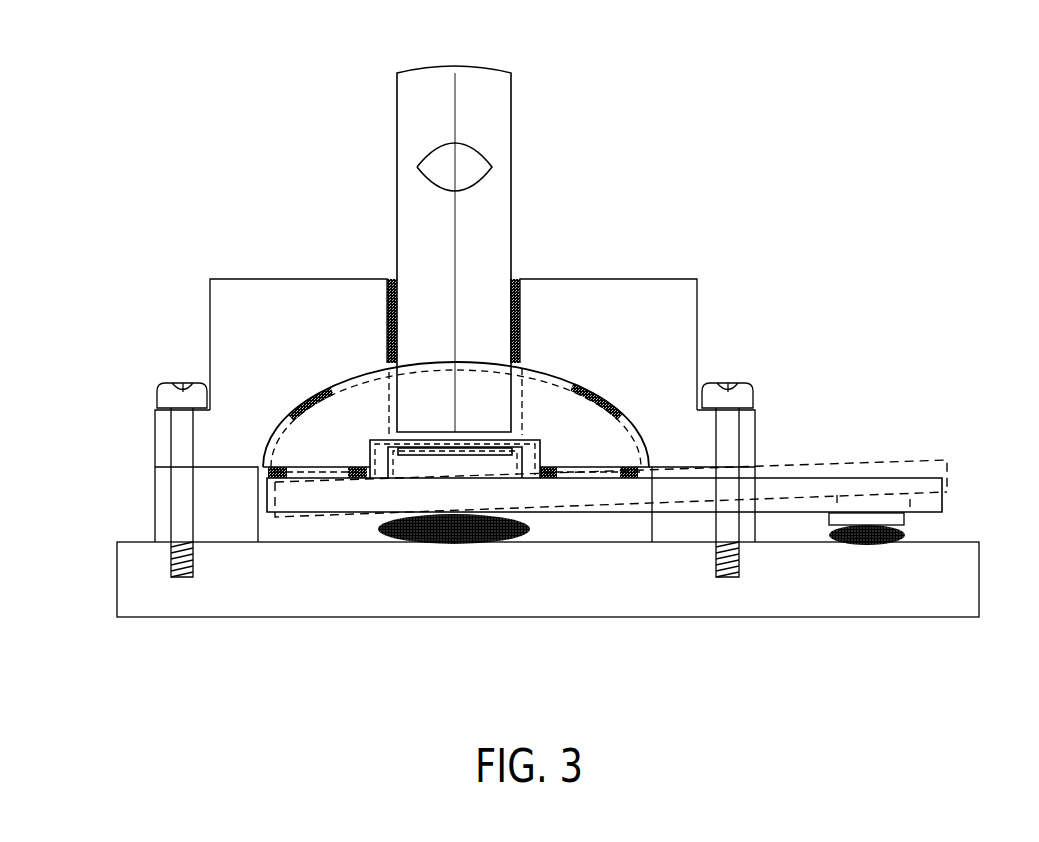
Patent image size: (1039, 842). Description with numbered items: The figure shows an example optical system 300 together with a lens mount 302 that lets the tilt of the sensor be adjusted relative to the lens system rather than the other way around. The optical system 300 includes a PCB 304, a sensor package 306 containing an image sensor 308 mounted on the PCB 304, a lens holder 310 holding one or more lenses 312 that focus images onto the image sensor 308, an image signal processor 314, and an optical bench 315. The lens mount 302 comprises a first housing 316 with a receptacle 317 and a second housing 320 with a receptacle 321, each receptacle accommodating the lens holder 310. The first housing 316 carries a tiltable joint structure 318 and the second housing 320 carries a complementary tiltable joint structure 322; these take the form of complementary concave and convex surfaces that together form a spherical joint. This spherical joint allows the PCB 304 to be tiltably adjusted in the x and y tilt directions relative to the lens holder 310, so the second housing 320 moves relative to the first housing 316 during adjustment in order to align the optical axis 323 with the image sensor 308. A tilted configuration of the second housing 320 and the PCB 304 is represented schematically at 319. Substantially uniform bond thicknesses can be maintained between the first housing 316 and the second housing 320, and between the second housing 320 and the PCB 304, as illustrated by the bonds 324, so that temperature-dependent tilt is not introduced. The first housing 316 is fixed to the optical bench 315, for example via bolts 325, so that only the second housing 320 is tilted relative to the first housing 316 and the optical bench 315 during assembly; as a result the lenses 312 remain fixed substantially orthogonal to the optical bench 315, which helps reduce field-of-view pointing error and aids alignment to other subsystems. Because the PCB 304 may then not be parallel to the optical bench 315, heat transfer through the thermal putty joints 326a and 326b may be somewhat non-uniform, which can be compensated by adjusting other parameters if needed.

The optical system 300 is at (868, 71).
The lens mount 302 is at (135, 279).
The PCB 304 is at (817, 477).
The sensor package 306 is at (523, 458).
The image sensor 308 is at (458, 460).
The lens holder 310 is at (512, 205).
The lenses 312 is at (483, 152).
The image signal processor 314 is at (906, 516).
The optical bench 315 is at (545, 594).
The first housing 316 is at (338, 344).
The receptacle 317 is at (515, 276).
The tiltable joint structure 318 is at (628, 412).
The tilted configuration 319 is at (921, 458).
The second housing 320 is at (347, 444).
The receptacle 321 is at (520, 366).
The complementary tiltable joint structure 322 is at (563, 378).
The optical axis 323 is at (453, 360).
The bonds 324 is at (282, 480).
The bolts 325 is at (195, 555).
The thermal putty joint 326a is at (453, 545).
The thermal putty joint 326b is at (864, 546).